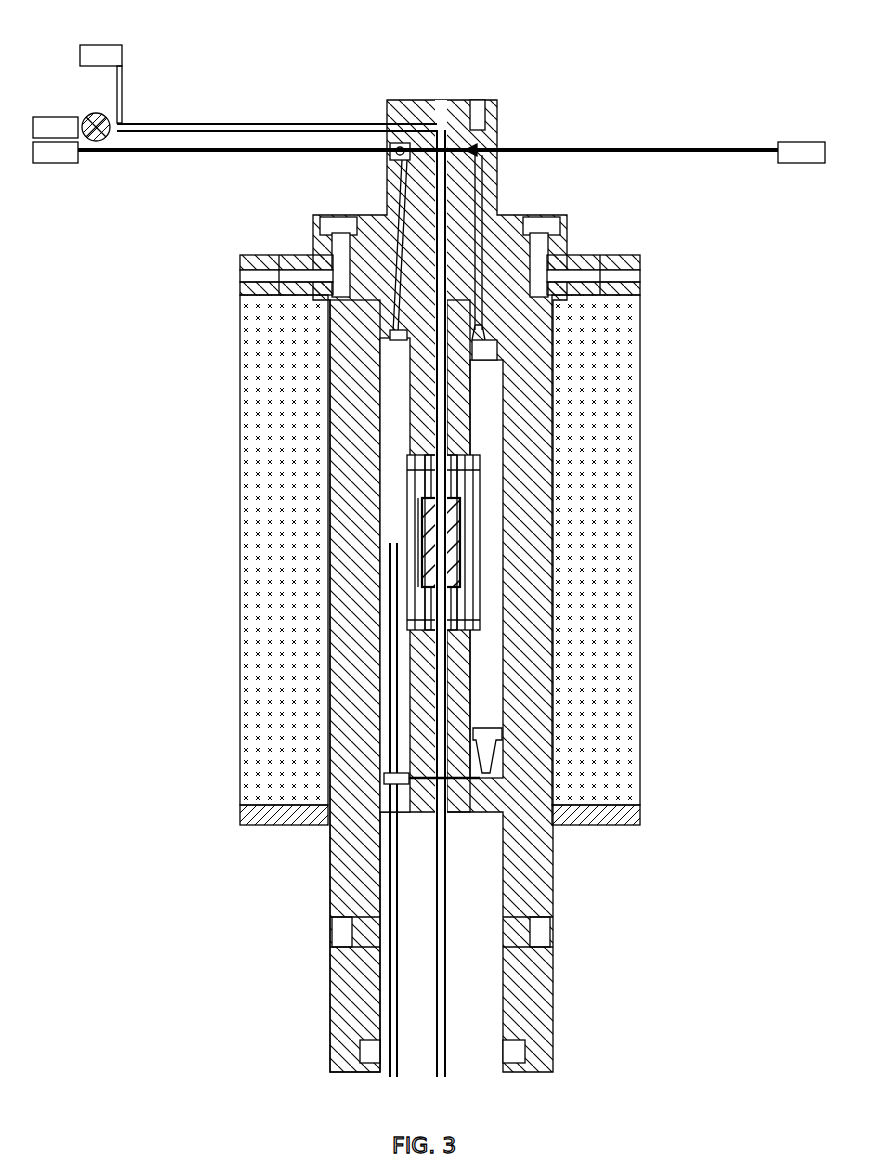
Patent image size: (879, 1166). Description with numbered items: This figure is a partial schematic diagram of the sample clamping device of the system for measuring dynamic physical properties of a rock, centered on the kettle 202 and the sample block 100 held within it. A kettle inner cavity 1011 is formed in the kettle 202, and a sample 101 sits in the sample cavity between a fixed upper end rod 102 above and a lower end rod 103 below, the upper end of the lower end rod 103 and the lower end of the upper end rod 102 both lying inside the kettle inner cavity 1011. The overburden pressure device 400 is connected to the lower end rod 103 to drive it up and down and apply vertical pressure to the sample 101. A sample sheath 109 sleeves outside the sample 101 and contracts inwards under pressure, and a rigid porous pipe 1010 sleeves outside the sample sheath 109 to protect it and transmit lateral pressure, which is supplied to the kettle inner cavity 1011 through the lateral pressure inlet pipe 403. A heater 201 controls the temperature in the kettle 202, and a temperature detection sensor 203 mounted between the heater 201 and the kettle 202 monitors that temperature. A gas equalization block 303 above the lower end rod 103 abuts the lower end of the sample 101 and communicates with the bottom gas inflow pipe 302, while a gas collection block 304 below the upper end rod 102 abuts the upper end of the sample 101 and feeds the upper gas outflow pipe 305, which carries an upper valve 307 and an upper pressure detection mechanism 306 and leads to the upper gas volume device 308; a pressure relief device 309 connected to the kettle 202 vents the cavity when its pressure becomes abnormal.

The sample block 100 is at (455, 513).
The sample 101 is at (462, 542).
The upper end rod 102 is at (453, 395).
The lower end rod 103 is at (462, 685).
The sample sheath 109 is at (405, 478).
The porous pipe 1010 is at (417, 528).
The kettle inner cavity 1011 is at (400, 395).
The heater 201 is at (290, 627).
The kettle 202 is at (355, 712).
The temperature detection sensor 203 is at (325, 770).
The bottom gas inflow pipe 302 is at (440, 873).
The gas equalization block 303 is at (445, 606).
The gas collection block 304 is at (465, 478).
The upper gas outflow pipe 305 is at (245, 123).
The upper pressure detection mechanism 306 is at (122, 55).
The upper valve 307 is at (103, 133).
The upper gas volume device 308 is at (58, 128).
The pressure relief device 309 is at (50, 158).
The overburden pressure device 400 is at (412, 800).
The lateral pressure inlet pipe 403 is at (395, 977).